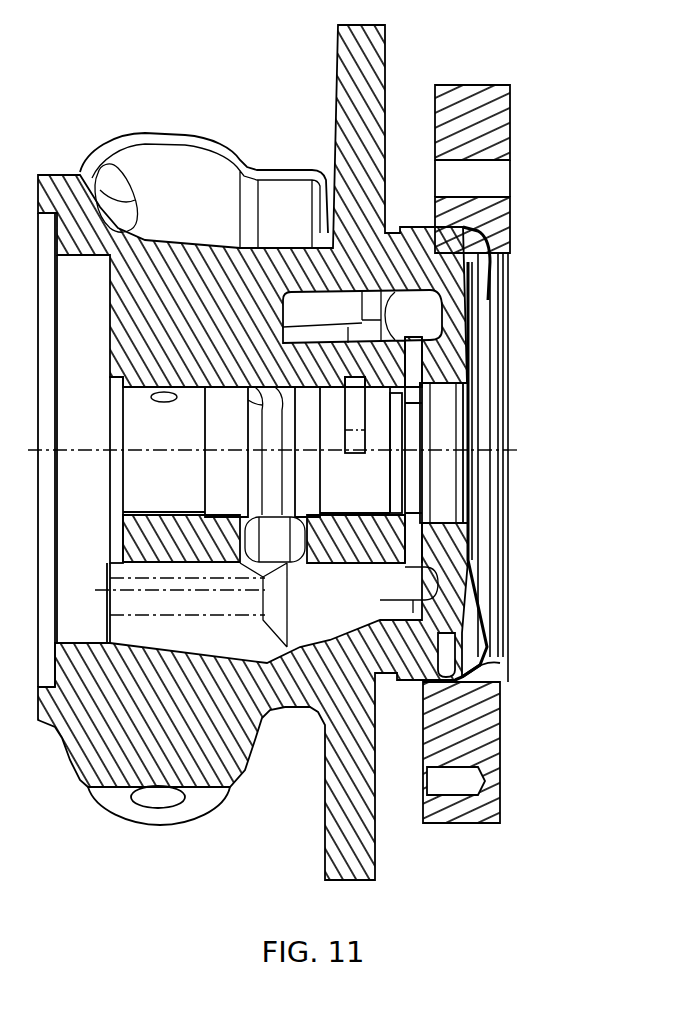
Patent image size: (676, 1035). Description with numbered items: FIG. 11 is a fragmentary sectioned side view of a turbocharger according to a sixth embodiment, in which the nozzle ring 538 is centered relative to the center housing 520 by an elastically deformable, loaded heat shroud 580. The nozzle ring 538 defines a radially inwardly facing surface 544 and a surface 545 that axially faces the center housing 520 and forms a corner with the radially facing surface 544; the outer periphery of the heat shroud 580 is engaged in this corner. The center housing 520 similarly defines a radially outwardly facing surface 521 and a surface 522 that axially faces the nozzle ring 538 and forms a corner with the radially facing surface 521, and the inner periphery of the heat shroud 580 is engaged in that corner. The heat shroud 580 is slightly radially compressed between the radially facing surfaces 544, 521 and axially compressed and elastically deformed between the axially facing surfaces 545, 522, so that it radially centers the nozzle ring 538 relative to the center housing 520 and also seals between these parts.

The center housing 520 is at (348, 113).
The radially outwardly facing surface 521 is at (478, 337).
The surface that axially faces the nozzle ring 522 is at (480, 326).
The nozzle ring 538 is at (472, 90).
The radially inwardly facing surface 544 is at (452, 232).
The surface that axially faces the center housing 545 is at (478, 678).
The heat shroud 580 is at (468, 305).